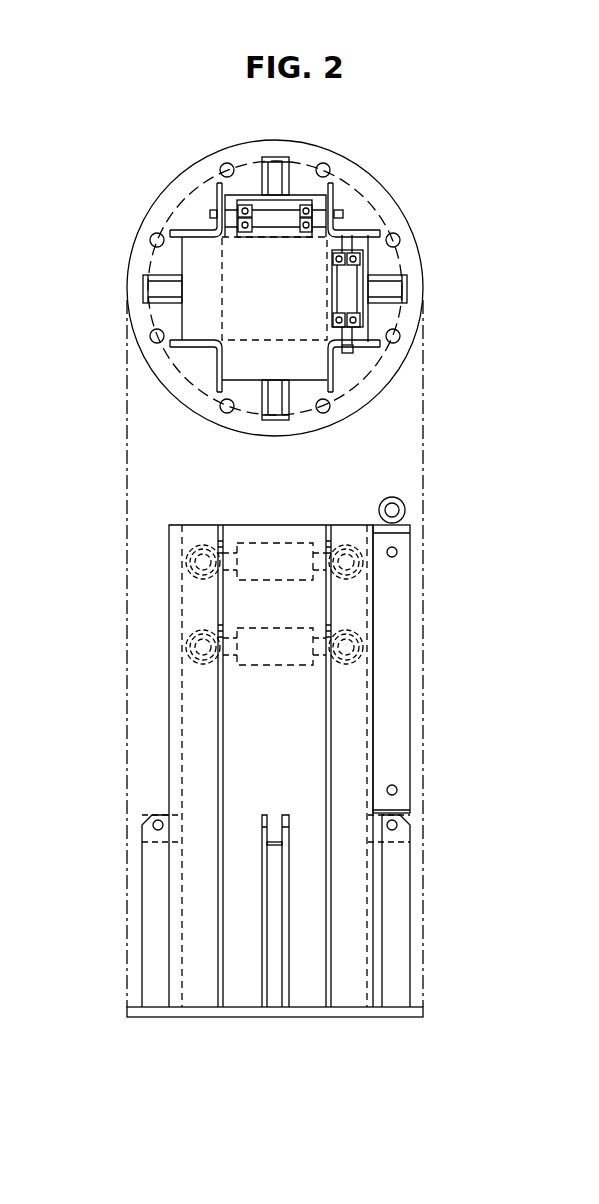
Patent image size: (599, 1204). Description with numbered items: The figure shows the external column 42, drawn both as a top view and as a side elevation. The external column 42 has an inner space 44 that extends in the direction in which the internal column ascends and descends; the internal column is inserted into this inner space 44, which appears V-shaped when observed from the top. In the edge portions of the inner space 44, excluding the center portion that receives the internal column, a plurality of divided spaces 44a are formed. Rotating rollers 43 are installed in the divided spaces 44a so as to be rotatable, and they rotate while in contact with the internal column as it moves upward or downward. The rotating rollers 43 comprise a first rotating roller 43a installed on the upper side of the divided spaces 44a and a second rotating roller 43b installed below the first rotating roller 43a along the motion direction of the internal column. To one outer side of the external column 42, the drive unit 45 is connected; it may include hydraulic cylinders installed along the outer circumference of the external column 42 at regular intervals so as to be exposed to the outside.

The external column 42 is at (258, 403).
The rotating rollers 43 is at (362, 258).
The first rotating roller 43a is at (363, 557).
The second rotating roller 43b is at (363, 645).
The inner space 44 is at (260, 267).
The divided spaces 44a is at (240, 358).
The drive unit 45 is at (410, 735).